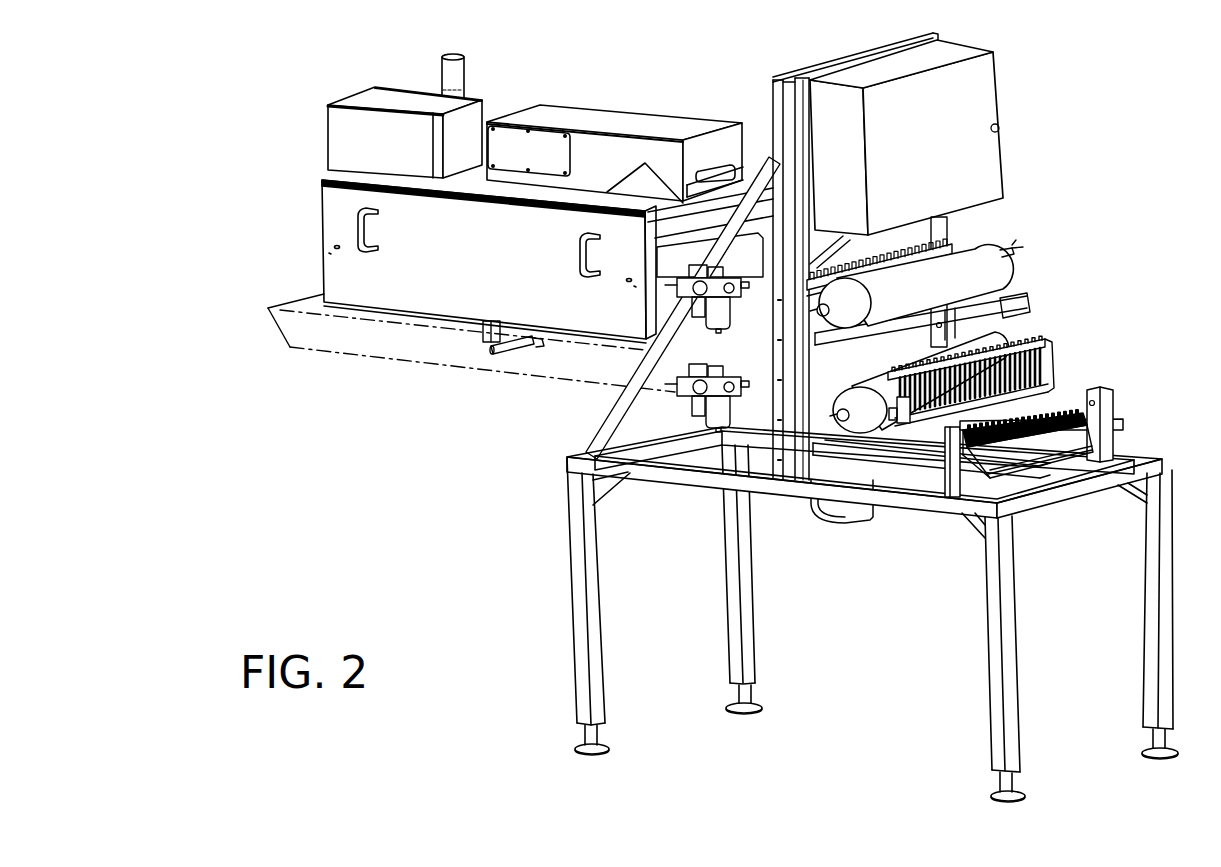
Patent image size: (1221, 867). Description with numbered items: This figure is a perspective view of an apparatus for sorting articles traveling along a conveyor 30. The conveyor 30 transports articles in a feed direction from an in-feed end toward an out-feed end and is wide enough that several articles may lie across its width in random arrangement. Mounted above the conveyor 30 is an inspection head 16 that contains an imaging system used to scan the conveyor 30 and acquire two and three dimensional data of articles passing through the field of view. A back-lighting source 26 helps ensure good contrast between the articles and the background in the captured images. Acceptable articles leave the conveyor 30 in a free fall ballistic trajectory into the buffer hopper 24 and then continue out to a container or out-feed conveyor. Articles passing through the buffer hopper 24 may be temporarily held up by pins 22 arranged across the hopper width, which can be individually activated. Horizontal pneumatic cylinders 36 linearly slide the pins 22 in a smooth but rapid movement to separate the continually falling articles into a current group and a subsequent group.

The inspection head 16 is at (612, 105).
The pins 22 is at (926, 462).
The buffer hopper 24 is at (844, 541).
The back-lighting source 26 is at (492, 366).
The conveyor 30 is at (272, 296).
The horizontal pneumatic cylinders 36 is at (1035, 418).